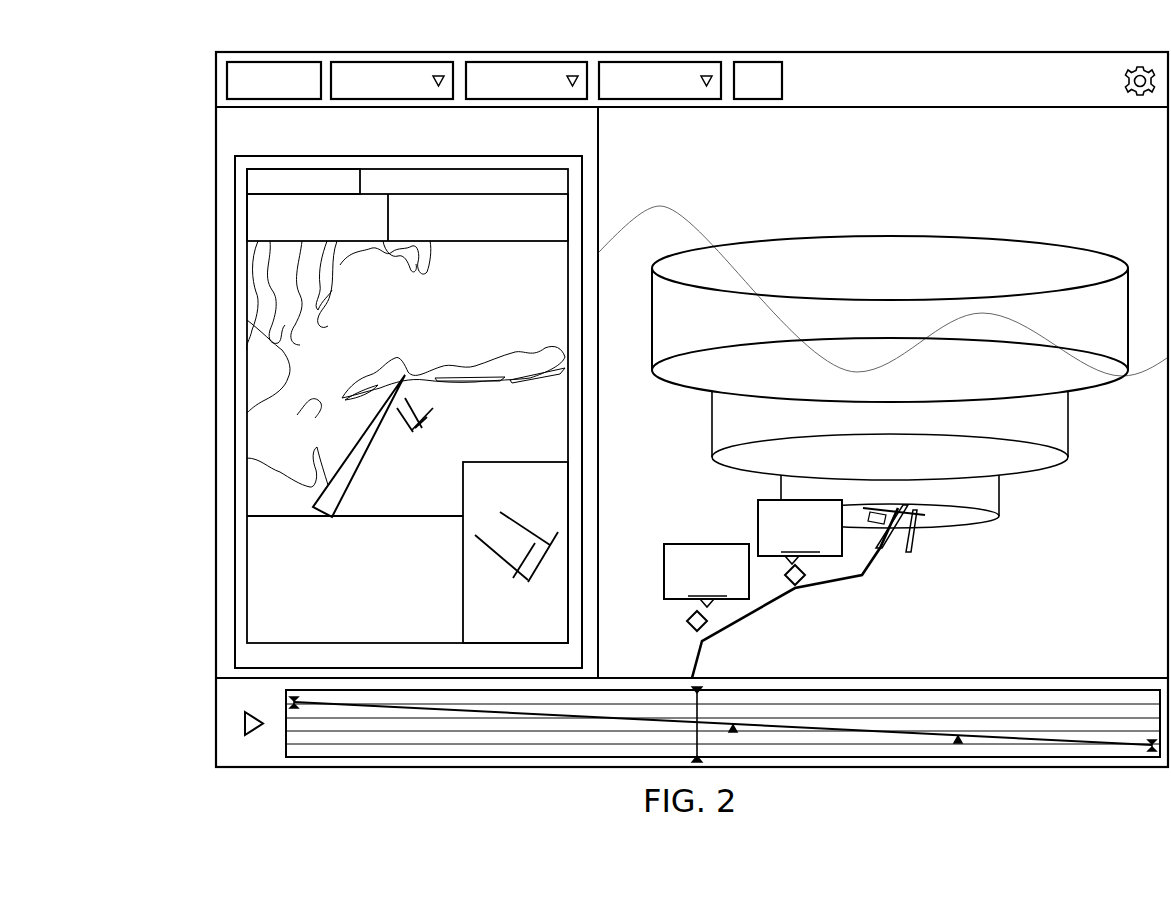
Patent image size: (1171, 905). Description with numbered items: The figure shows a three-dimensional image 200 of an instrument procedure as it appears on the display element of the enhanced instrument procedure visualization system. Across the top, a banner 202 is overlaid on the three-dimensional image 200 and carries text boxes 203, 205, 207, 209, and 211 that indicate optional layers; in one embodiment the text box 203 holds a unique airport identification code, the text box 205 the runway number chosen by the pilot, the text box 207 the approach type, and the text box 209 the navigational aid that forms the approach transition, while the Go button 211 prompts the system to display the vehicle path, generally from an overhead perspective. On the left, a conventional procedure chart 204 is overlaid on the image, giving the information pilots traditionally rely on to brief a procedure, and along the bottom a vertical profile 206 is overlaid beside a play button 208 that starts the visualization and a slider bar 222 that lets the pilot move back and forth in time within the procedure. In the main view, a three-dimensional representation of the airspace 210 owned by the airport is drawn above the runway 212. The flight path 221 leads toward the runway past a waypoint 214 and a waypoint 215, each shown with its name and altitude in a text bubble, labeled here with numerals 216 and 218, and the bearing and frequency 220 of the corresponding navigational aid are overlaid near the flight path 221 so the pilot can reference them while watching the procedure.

The three-dimensional image 200 is at (1134, 149).
The banner 202 is at (992, 64).
The text box 203 is at (272, 62).
The procedure chart 204 is at (431, 156).
The text box 205 is at (398, 62).
The vertical profile 206 is at (1063, 712).
The text box 207 is at (535, 62).
The play button 208 is at (243, 723).
The text box 209 is at (660, 62).
The airspace 210 is at (1005, 250).
The Go button 211 is at (762, 62).
The runway 212 is at (894, 546).
The waypoint 214 is at (690, 628).
The waypoint 215 is at (803, 584).
The waypoint label 216 is at (670, 544).
The waypoint label 218 is at (758, 530).
The bearing and frequency 220 is at (814, 639).
The flight path 221 is at (878, 566).
The slider bar 222 is at (700, 710).